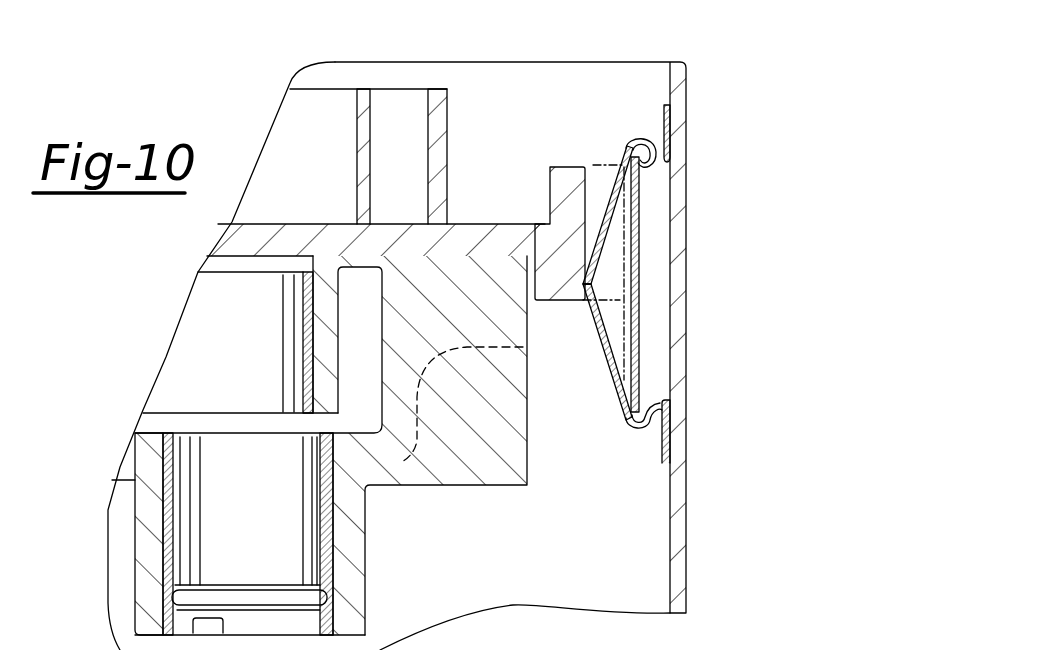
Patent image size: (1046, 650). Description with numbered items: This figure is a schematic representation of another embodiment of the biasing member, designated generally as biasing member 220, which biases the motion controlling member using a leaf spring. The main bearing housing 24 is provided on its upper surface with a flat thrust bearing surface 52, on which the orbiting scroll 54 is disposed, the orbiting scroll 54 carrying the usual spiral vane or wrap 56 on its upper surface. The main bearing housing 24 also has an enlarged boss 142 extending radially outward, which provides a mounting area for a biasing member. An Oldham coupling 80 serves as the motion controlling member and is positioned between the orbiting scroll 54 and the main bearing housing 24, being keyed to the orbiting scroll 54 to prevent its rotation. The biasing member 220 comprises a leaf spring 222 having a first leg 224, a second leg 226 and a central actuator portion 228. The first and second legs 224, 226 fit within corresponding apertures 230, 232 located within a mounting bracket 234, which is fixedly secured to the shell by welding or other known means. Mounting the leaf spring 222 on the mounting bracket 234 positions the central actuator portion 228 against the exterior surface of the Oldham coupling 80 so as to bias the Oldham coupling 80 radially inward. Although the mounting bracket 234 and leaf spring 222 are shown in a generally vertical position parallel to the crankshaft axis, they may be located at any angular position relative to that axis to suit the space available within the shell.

The biasing member 220 is at (286, 76).
The spiral vane or wrap 56 is at (440, 153).
The flat thrust bearing surface 52 is at (407, 262).
The orbiting scroll 54 is at (486, 238).
The Oldham coupling 80 is at (552, 303).
The enlarged boss 142 is at (457, 470).
The main bearing housing 24 is at (153, 532).
The first leg 224 is at (623, 197).
The second leg 226 is at (617, 380).
The central actuator portion 228 is at (588, 284).
The mounting bracket 234 is at (642, 328).
The aperture 230 is at (663, 152).
The leaf spring 222 is at (638, 433).
The aperture 232 is at (660, 413).